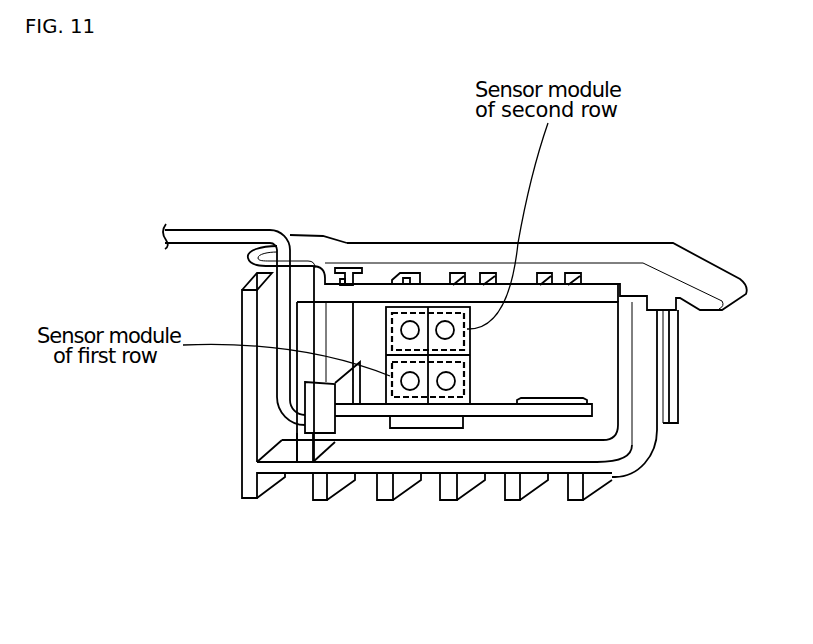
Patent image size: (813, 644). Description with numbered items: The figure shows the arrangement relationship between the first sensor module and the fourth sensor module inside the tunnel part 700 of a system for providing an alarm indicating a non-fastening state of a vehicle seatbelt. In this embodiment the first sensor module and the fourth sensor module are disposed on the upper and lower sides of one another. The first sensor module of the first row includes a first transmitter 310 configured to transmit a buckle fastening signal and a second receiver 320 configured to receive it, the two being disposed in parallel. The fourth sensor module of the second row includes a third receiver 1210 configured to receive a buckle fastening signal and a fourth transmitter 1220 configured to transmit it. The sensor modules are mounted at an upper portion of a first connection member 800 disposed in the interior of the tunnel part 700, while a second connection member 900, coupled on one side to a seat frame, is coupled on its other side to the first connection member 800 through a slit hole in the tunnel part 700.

The tunnel part 700 is at (580, 358).
The first connection member 800 is at (562, 413).
The second connection member 900 is at (228, 230).
The third receiver 1210 is at (409, 330).
The fourth transmitter 1220 is at (445, 330).
The first transmitter 310 is at (447, 384).
The second receiver 320 is at (410, 384).